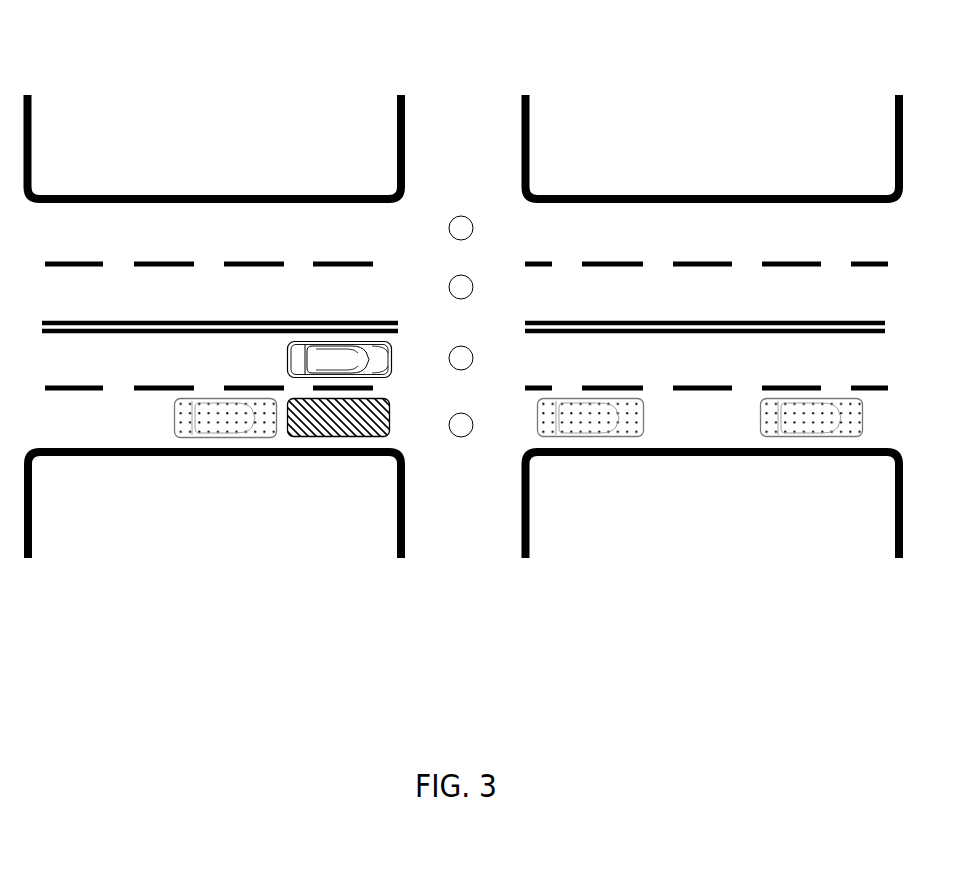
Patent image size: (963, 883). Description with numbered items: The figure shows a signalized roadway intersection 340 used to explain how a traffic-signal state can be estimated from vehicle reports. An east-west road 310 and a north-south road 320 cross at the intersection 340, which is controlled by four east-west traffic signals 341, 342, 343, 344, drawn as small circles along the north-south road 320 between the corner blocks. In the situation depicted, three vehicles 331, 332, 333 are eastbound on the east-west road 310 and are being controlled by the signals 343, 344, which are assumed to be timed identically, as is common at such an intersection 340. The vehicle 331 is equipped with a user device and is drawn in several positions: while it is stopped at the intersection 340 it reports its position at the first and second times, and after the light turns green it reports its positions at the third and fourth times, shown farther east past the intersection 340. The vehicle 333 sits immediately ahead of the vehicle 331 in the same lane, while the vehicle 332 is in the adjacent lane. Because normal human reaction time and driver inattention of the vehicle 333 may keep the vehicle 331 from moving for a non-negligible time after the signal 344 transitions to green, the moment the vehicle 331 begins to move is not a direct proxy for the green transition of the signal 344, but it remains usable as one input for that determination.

The east-west road 310 is at (463, 385).
The north-south road 320 is at (464, 147).
The vehicle 331 is at (511, 422).
The vehicle 332 is at (314, 356).
The vehicle 333 is at (363, 429).
The signalized roadway intersection 340 is at (456, 324).
The east-west traffic signal 341 is at (492, 231).
The east-west traffic signal 342 is at (488, 293).
The east-west traffic signal 343 is at (487, 350).
The east-west traffic signal 344 is at (476, 408).